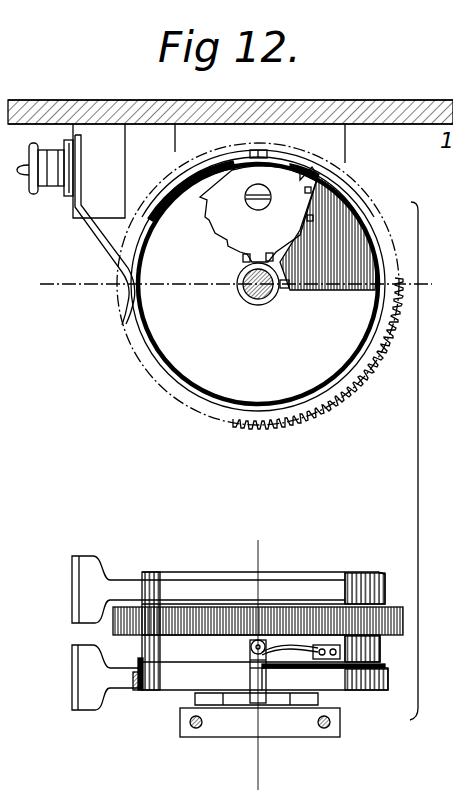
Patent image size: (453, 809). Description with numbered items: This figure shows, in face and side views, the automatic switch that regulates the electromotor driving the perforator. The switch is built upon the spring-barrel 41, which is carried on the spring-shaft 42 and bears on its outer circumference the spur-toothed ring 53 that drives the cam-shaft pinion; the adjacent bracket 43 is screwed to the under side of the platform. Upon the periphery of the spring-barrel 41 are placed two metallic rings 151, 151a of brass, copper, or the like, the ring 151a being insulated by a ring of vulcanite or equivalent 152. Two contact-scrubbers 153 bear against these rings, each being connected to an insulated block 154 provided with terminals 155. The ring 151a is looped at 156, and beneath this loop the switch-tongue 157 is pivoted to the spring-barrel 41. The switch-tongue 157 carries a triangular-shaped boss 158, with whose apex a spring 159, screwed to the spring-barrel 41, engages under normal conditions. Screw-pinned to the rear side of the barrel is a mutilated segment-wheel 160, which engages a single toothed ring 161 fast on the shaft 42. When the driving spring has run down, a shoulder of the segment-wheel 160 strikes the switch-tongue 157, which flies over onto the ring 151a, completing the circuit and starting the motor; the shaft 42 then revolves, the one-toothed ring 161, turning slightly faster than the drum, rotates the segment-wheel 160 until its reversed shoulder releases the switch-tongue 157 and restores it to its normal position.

The spring-barrel 41 is at (372, 575).
The spring-shaft 42 is at (258, 303).
The frame bracket 43 is at (245, 727).
The spur-toothed ring 53 is at (358, 403).
The metallic ring 151 is at (293, 587).
The insulated metallic ring 151a is at (362, 198).
The insulating ring 152 is at (343, 688).
The contact-scrubber 153 is at (98, 243).
The insulated block 154 is at (99, 171).
The terminal 155 is at (58, 187).
The loop 156 is at (222, 162).
The switch-tongue 157 is at (265, 150).
The triangular-shaped boss 158 is at (251, 648).
The spring 159 is at (257, 150).
The mutilated segment-wheel 160 is at (294, 226).
The single toothed ring 161 is at (283, 288).